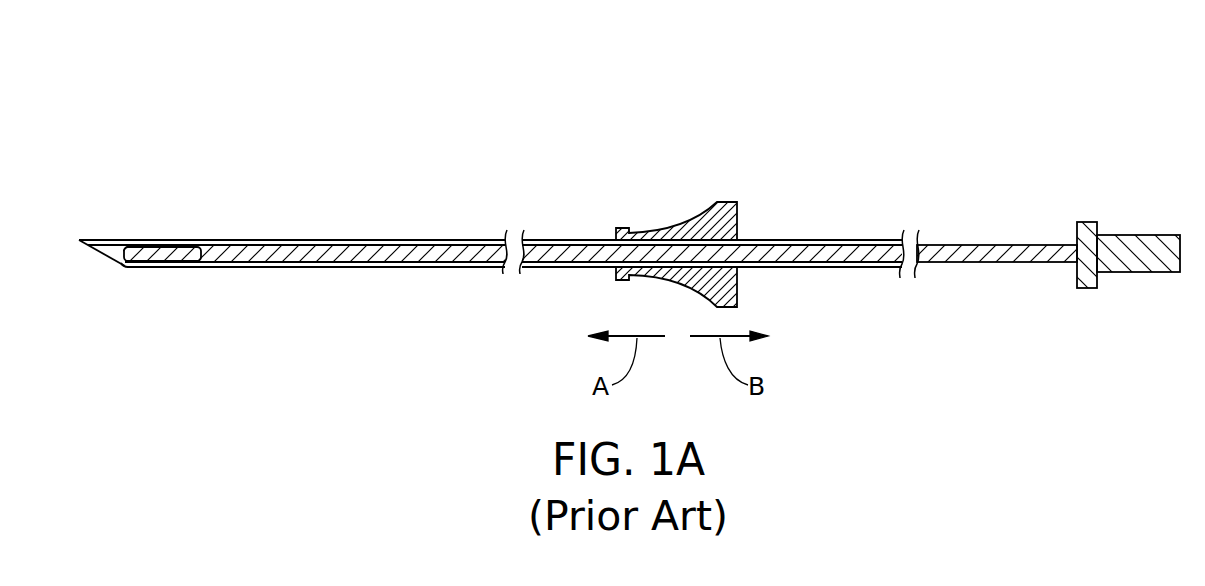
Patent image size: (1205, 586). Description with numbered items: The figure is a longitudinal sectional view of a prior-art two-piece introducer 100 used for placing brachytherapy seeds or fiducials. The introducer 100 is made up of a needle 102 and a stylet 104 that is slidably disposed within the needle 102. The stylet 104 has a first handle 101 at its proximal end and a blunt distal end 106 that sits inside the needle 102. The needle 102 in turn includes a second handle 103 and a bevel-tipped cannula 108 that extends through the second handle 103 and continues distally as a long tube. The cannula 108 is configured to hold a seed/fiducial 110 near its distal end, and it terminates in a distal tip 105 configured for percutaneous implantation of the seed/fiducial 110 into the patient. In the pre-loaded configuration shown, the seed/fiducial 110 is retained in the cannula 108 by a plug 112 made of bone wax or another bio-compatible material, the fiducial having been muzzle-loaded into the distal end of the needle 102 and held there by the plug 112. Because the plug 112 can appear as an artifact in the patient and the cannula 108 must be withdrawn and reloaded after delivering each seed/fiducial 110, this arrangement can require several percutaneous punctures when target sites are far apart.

The two-piece introducer 100 is at (618, 194).
The first handle 101 is at (1160, 233).
The needle 102 is at (490, 183).
The second handle 103 is at (676, 226).
The stylet 104 is at (973, 217).
The distal tip 105 is at (98, 240).
The blunt distal end 106 is at (479, 301).
The bevel-tipped cannula 108 is at (228, 240).
The seed/fiducial 110 is at (158, 264).
The plug 112 is at (125, 267).